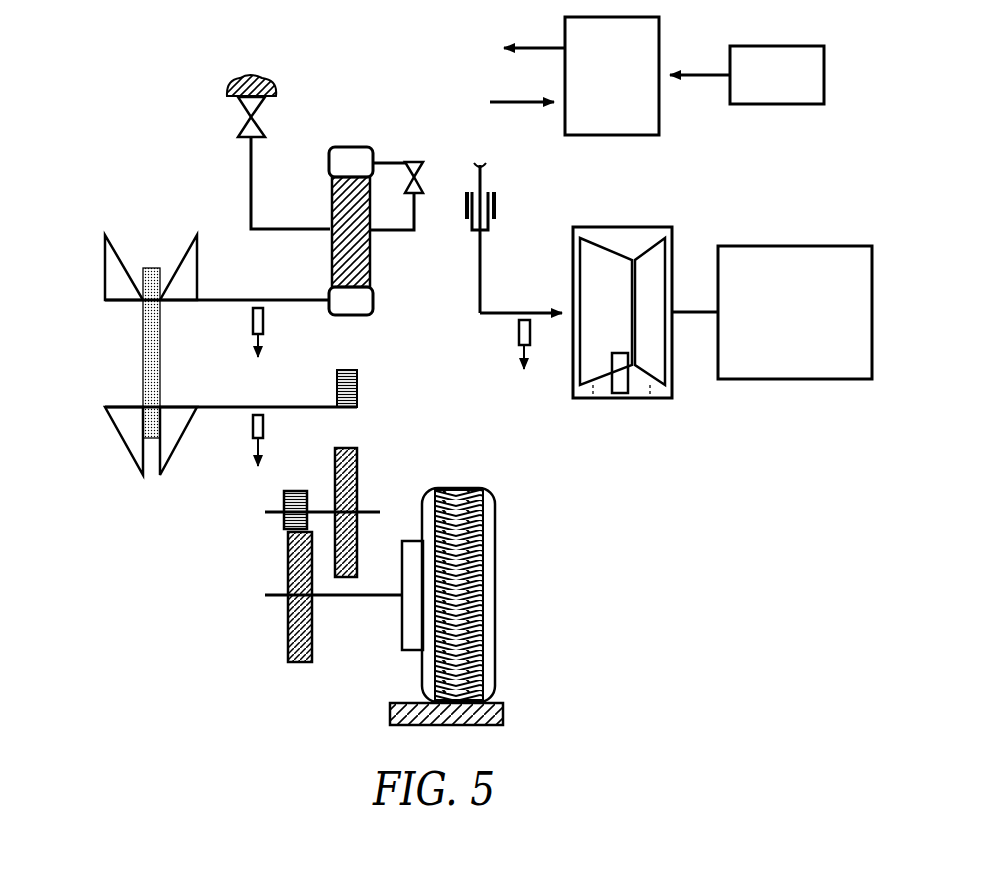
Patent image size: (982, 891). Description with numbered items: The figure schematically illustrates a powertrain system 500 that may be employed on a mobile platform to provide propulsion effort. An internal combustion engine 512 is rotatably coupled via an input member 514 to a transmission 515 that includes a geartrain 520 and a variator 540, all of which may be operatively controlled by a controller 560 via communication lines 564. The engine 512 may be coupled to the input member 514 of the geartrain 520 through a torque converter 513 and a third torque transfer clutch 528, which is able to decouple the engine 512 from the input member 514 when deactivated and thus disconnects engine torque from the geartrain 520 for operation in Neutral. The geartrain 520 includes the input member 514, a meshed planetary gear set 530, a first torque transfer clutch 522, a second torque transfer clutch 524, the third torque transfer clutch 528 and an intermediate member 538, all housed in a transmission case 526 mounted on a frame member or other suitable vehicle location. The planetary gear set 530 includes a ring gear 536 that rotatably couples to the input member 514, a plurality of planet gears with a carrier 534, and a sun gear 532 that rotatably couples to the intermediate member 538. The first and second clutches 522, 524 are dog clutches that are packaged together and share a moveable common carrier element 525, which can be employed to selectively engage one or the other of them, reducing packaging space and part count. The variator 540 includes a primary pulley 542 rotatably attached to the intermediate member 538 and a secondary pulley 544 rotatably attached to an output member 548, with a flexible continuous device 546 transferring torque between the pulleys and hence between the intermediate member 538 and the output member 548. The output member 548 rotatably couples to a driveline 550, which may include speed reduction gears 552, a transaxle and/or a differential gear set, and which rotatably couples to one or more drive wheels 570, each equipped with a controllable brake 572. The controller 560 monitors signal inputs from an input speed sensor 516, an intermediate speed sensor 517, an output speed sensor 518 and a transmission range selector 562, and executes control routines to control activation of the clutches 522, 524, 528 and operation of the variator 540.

The powertrain system 500 is at (158, 95).
The internal combustion engine 512 is at (813, 326).
The torque converter 513 is at (627, 326).
The input member 514 is at (497, 312).
The transmission 515 is at (150, 203).
The input speed sensor 516 is at (519, 332).
The intermediate speed sensor 517 is at (263, 320).
The output speed sensor 518 is at (263, 425).
The geartrain 520 is at (382, 98).
The first torque transfer clutch 522 is at (428, 171).
The second torque transfer clutch 524 is at (270, 113).
The common carrier element 525 is at (243, 125).
The transmission case 526 is at (262, 79).
The third torque transfer clutch 528 is at (497, 206).
The planetary gear set 530 is at (376, 144).
The sun gear 532 is at (374, 305).
The carrier 534 is at (372, 250).
The ring gear 536 is at (376, 157).
The intermediate member 538 is at (243, 300).
The variator 540 is at (100, 255).
The primary pulley 542 is at (105, 284).
The secondary pulley 544 is at (122, 440).
The flexible continuous device 546 is at (147, 352).
The output member 548 is at (222, 406).
The driveline 550 is at (264, 566).
The speed reduction gears 552 is at (285, 520).
The controller 560 is at (632, 90).
The transmission range selector 562 is at (797, 90).
The communication lines 564 is at (555, 92).
The drive wheel 570 is at (428, 668).
The controllable brake 572 is at (402, 622).